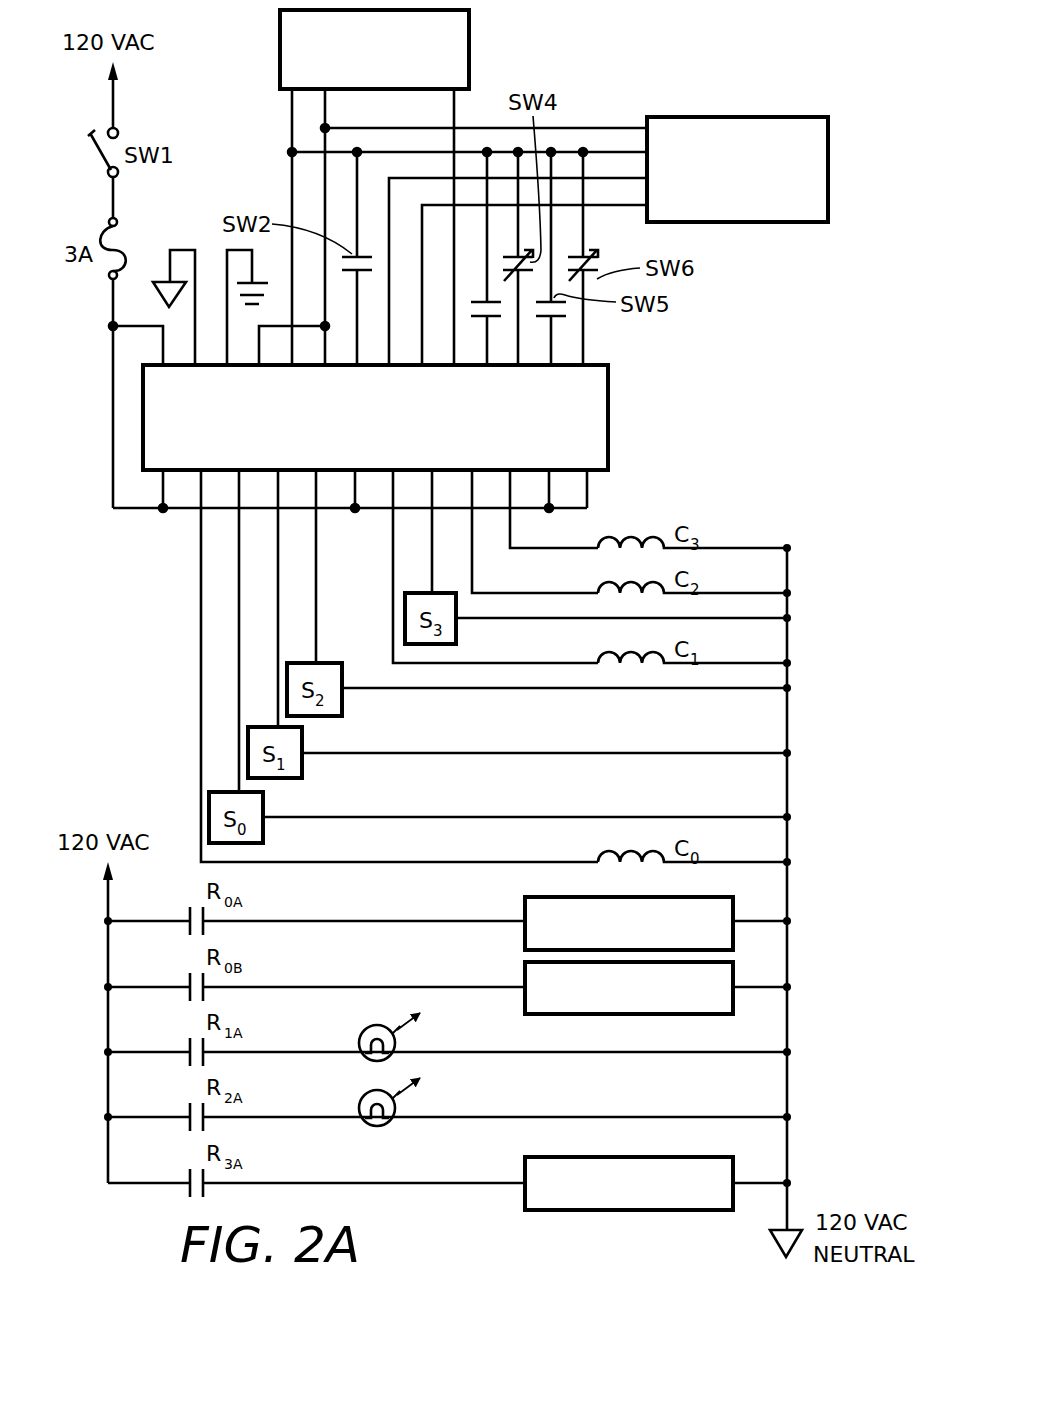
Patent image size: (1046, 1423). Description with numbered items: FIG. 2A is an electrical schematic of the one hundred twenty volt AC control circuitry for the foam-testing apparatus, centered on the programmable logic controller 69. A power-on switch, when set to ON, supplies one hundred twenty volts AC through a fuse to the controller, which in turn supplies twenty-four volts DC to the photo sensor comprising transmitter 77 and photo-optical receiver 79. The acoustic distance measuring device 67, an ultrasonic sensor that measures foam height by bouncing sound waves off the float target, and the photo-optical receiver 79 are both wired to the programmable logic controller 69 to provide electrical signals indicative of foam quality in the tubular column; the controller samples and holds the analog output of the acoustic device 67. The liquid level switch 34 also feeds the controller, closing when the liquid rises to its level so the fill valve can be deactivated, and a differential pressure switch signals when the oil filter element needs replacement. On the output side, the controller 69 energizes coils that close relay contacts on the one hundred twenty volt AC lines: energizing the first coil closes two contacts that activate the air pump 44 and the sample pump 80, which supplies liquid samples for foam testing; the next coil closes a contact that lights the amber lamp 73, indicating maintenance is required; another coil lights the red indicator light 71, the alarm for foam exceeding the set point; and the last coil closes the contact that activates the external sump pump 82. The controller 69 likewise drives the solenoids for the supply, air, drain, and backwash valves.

The transmitter 77 is at (429, 49).
The photo-optical receiver 79 is at (460, 48).
The acoustic distance measuring device 67 is at (752, 128).
The programmable logic controller 69 is at (600, 390).
The liquid level switch 34 is at (492, 320).
The air pump 44 is at (733, 912).
The sample pump 80 is at (733, 977).
The external sump pump 82 is at (733, 1172).
The amber lamp 73 is at (360, 1029).
The red indicator light 71 is at (360, 1094).